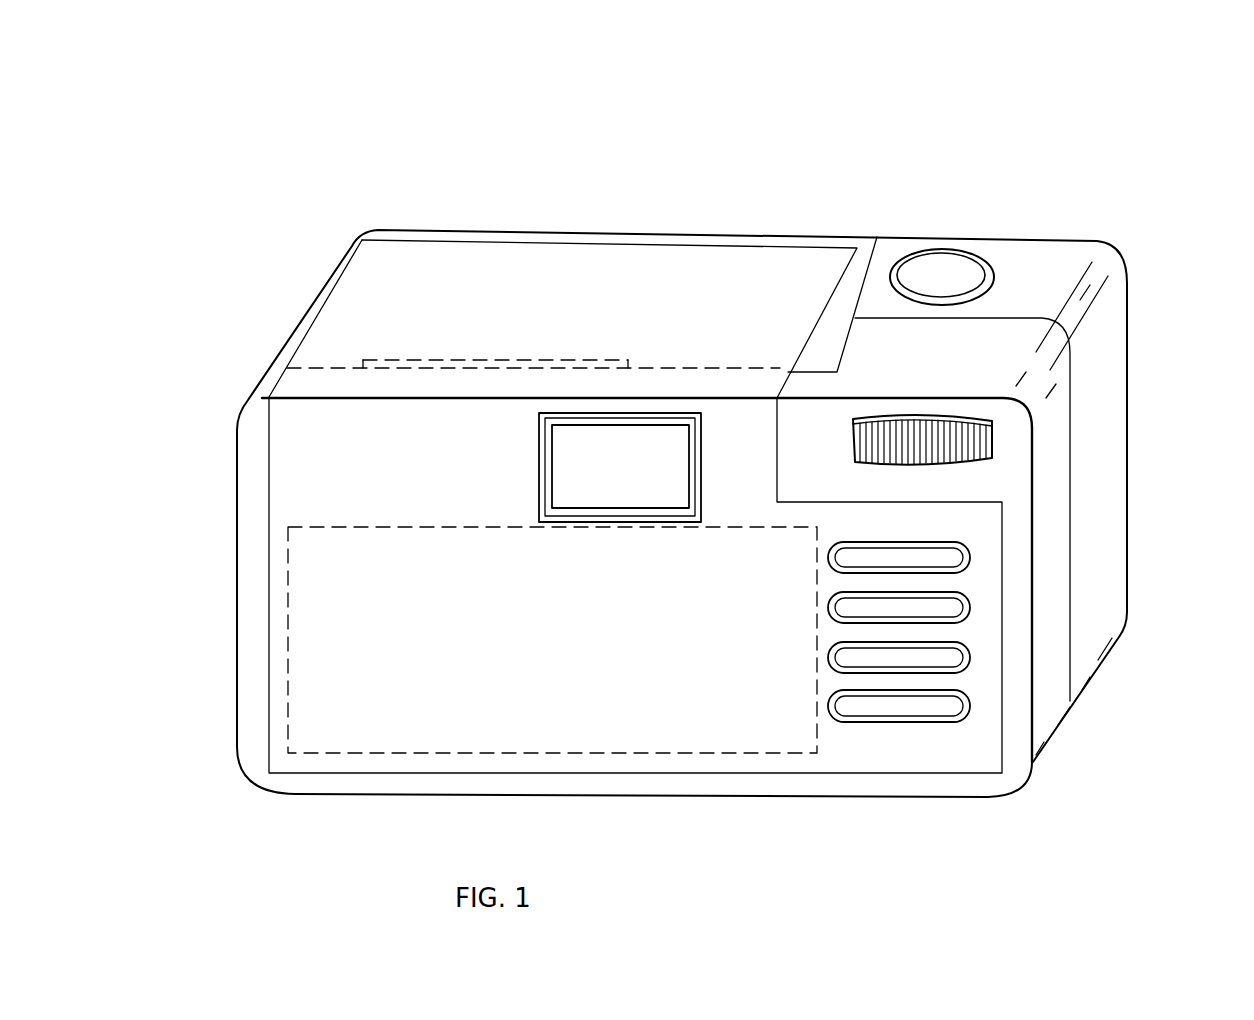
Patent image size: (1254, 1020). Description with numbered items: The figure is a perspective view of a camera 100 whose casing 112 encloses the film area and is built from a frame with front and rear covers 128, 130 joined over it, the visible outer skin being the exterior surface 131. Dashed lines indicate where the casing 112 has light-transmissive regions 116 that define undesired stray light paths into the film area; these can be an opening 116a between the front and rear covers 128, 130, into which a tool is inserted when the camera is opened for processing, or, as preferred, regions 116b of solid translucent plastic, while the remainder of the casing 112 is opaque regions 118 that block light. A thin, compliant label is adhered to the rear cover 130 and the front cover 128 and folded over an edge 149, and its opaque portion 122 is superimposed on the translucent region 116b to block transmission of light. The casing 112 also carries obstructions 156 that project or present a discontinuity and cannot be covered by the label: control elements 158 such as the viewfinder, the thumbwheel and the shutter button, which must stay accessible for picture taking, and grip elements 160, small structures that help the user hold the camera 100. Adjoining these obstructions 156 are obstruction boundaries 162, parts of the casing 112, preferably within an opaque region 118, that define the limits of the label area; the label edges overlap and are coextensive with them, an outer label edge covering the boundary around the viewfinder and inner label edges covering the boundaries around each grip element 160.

The camera 100 is at (762, 130).
The casing 112 is at (830, 238).
The light-transmissive region 116 is at (552, 557).
The opening 116a is at (443, 354).
The translucent region 116b is at (632, 716).
The opaque region 118 is at (244, 538).
The opaque portion 122 is at (393, 386).
The front cover 128 is at (1118, 345).
The rear cover 130 is at (1043, 720).
The exterior surface 131 is at (1114, 520).
The edge 149 is at (926, 404).
The obstruction 156 is at (896, 515).
The control element 158 is at (955, 272).
The grip element 160 is at (952, 660).
The obstruction boundary 162 is at (543, 448).